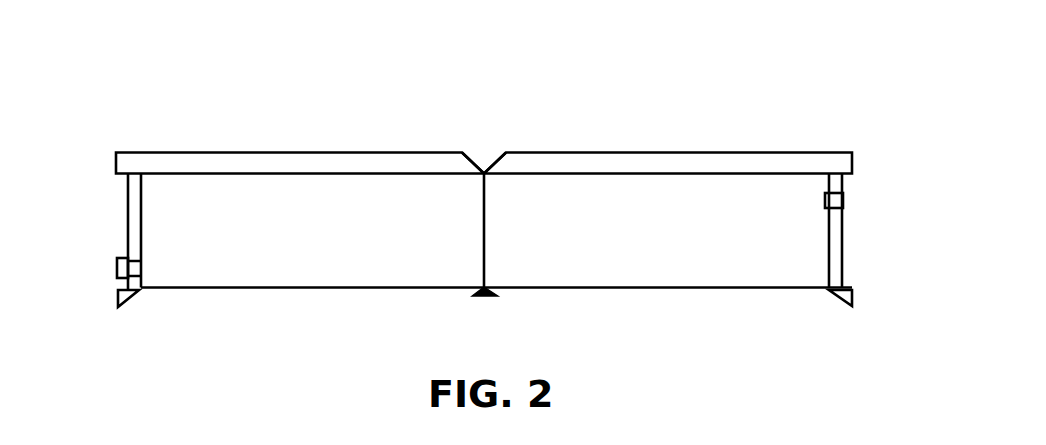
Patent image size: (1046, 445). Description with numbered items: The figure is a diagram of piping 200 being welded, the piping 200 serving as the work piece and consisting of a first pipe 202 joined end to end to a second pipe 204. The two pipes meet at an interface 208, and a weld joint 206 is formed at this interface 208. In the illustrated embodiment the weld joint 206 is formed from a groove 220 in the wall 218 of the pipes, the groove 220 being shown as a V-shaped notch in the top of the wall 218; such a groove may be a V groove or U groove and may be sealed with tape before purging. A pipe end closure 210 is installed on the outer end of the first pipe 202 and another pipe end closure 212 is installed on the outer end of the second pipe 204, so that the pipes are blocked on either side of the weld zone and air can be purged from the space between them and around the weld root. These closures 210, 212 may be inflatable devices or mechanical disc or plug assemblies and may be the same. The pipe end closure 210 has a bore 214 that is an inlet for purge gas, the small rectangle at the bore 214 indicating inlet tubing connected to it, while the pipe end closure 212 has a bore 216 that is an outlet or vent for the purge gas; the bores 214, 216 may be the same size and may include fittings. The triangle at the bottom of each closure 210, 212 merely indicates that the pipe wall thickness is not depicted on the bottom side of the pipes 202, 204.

The piping 200 is at (186, 122).
The first pipe 202 is at (340, 289).
The second pipe 204 is at (692, 289).
The weld joint 206 is at (488, 296).
The interface 208 is at (484, 229).
The pipe end closure 210 is at (127, 222).
The pipe end closure 212 is at (843, 215).
The bore 214 is at (117, 269).
The bore 216 is at (844, 198).
The wall 218 is at (644, 156).
The groove 220 is at (494, 158).